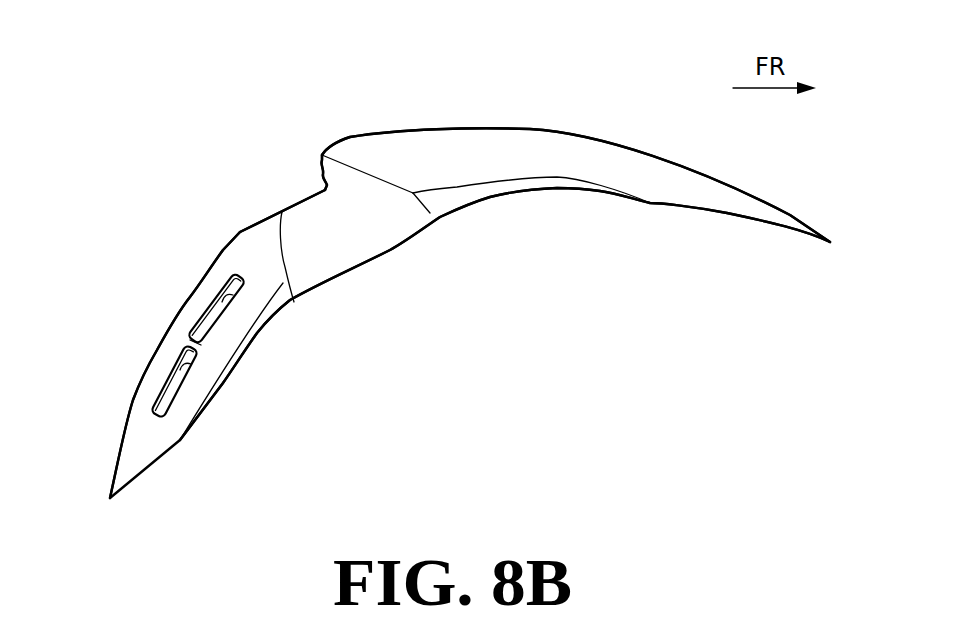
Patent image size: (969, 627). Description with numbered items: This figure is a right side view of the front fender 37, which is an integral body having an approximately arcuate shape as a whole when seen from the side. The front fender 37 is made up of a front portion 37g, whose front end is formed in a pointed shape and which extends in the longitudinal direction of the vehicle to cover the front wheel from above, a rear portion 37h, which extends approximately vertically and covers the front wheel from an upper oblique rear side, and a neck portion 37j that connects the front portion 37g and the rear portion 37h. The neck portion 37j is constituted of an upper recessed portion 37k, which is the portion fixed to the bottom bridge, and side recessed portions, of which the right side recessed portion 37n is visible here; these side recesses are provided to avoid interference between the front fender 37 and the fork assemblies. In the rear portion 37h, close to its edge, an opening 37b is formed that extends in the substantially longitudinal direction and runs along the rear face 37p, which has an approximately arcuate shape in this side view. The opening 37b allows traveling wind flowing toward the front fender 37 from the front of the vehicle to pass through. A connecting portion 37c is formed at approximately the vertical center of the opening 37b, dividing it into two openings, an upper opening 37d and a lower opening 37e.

The front fender 37 is at (223, 117).
The front portion 37g is at (550, 143).
The side recessed portion 37n is at (358, 240).
The rear portion 37h is at (228, 258).
The upper recessed portion 37k is at (297, 203).
The neck portion 37j is at (308, 184).
The rear face 37p is at (180, 318).
The opening 37b is at (170, 368).
The connecting portion 37c is at (200, 343).
The upper opening 37d is at (228, 300).
The lower opening 37e is at (183, 367).